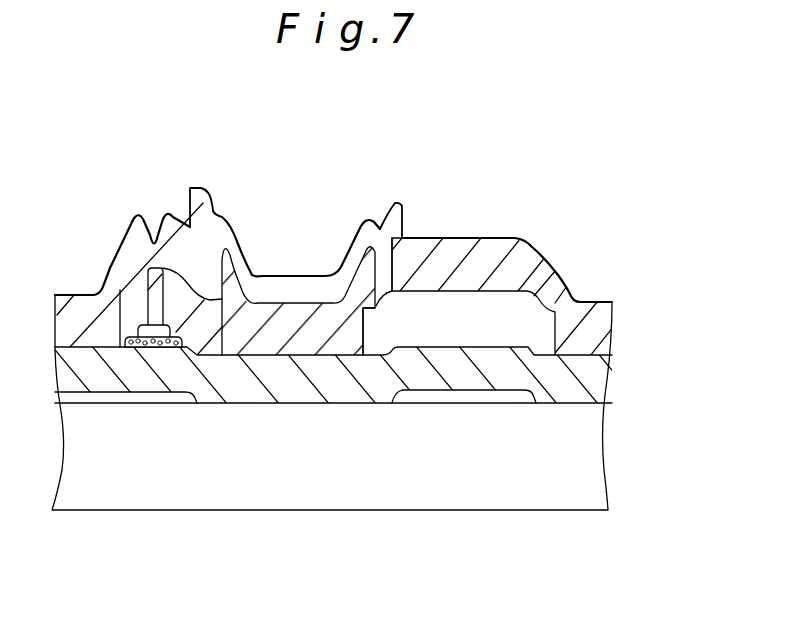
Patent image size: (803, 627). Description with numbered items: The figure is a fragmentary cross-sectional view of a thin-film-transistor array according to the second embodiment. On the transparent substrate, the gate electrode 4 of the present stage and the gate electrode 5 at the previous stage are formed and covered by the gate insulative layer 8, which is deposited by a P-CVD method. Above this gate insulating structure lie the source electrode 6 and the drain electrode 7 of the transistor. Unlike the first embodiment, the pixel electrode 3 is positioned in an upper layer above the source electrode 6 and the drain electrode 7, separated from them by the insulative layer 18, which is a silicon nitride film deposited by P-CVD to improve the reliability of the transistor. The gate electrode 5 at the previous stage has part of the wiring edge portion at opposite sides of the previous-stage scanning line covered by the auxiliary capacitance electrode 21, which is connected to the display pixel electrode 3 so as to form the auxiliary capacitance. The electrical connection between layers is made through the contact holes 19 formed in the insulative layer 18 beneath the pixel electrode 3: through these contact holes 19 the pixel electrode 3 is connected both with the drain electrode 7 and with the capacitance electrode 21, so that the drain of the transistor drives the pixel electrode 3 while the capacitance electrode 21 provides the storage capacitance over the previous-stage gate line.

The pixel electrode 3 is at (280, 288).
The gate electrode 4 is at (152, 400).
The gate electrode at the previous stage 5 is at (472, 400).
The source electrode 6 is at (133, 300).
The drain electrode 7 is at (207, 316).
The gate insulative layer 8 is at (570, 379).
The insulative layer 18 is at (533, 263).
The contact holes 19 is at (200, 198).
The auxiliary capacitance electrode 21 is at (458, 310).